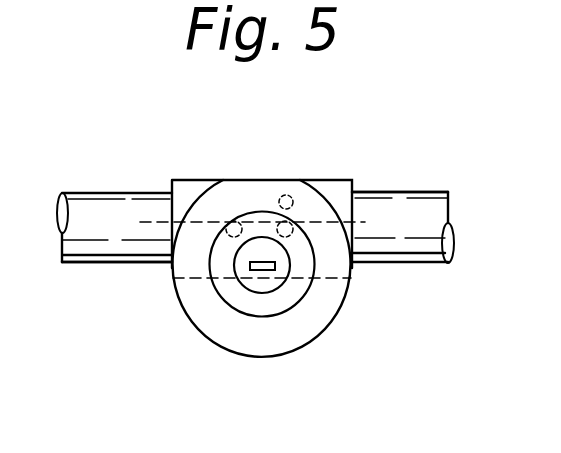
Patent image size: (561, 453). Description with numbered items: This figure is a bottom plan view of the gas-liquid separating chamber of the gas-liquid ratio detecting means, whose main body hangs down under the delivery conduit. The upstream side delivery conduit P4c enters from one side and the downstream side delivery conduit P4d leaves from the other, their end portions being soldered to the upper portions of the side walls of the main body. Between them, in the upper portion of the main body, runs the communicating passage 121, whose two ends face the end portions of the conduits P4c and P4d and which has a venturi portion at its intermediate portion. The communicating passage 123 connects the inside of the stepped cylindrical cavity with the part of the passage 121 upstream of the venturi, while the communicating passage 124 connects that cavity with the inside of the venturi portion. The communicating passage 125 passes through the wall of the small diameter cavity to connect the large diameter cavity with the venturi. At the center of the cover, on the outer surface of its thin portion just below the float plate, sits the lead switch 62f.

The communicating passage 121 is at (332, 179).
The communicating passage 123 is at (167, 222).
The communicating passage 124 is at (362, 225).
The communicating passage 125 is at (284, 196).
The lead switch 62f is at (267, 271).
The upstream side delivery conduit P4c is at (122, 265).
The downstream side delivery conduit P4d is at (421, 192).